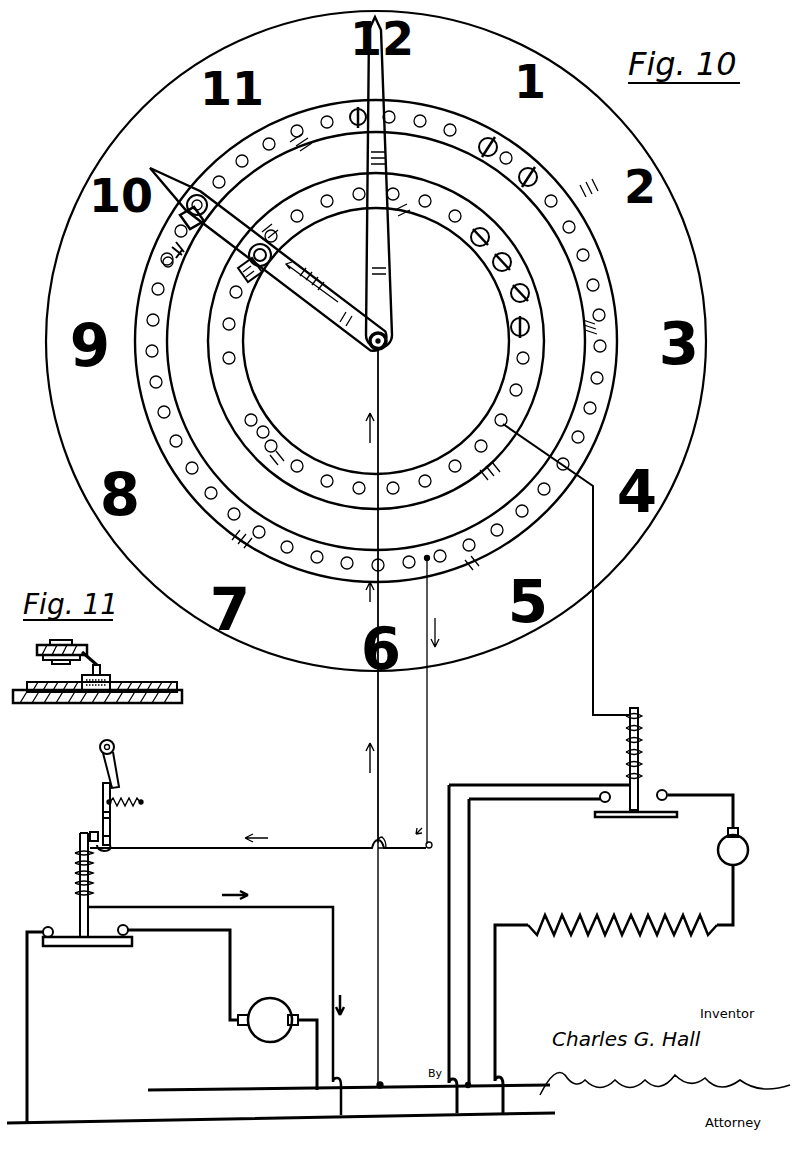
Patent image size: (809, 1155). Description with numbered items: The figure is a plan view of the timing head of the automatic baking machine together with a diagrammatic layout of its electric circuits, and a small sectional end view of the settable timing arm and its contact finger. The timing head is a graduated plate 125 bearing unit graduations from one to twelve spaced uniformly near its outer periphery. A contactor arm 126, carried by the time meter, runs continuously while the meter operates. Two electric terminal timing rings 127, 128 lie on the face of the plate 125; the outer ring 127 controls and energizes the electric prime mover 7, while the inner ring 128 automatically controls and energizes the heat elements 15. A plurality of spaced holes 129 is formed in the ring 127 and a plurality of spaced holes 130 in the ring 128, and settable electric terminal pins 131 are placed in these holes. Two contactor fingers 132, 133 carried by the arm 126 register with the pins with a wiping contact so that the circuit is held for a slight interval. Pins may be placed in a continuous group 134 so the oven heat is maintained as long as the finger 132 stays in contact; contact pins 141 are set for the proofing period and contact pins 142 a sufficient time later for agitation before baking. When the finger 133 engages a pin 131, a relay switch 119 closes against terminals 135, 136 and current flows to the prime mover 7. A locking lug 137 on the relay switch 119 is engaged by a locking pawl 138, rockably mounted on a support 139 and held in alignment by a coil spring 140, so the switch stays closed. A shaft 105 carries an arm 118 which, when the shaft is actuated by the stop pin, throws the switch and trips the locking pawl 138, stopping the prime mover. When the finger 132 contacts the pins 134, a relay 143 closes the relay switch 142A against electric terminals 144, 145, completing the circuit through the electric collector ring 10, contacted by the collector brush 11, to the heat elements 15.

In FIG. 10, the graduated plate 125 is at (613, 123).
In FIG. 11, the graduated plate 125 is at (176, 700).
In FIG. 10, the contactor arm 126 is at (320, 308).
In FIG. 11, the contactor arm 126 is at (80, 650).
In FIG. 10, the electric terminal timing ring 127 is at (165, 430).
In FIG. 11, the electric terminal timing ring 127 is at (160, 686).
In FIG. 10, the electric terminal timing ring 128 is at (278, 432).
In FIG. 10, the spaced holes 129 is at (232, 518).
In FIG. 10, the spaced holes 130 is at (268, 428).
In FIG. 10, the settable electric terminal pin 131 is at (530, 294).
In FIG. 11, the settable electric terminal pin 131 is at (110, 680).
In FIG. 10, the contactor finger 132 is at (246, 280).
In FIG. 10, the contactor finger 133 is at (175, 224).
In FIG. 11, the contactor finger 133 is at (100, 668).
In FIG. 10, the group of pins 134 is at (510, 263).
In FIG. 10, the contact pins 141 is at (350, 113).
In FIG. 10, the contact pins 142 is at (533, 170).
In FIG. 10, the relay 143 is at (638, 710).
In FIG. 10, the relay switch 142A is at (642, 818).
In FIG. 10, the electric terminal 144 is at (600, 804).
In FIG. 10, the electric terminal 145 is at (667, 789).
In FIG. 10, the electric collector ring 10 is at (721, 860).
In FIG. 10, the collector brush 11 is at (740, 832).
In FIG. 10, the heat elements 15 is at (614, 932).
In FIG. 10, the electric prime mover 7 is at (268, 1012).
In FIG. 10, the shaft 105 is at (114, 745).
In FIG. 10, the arm 118 is at (116, 764).
In FIG. 10, the relay switch 119 is at (80, 843).
In FIG. 10, the terminal 135 is at (50, 926).
In FIG. 10, the terminal 136 is at (130, 928).
In FIG. 10, the locking lug 137 is at (92, 836).
In FIG. 10, the locking pawl 138 is at (110, 840).
In FIG. 10, the support 139 is at (110, 818).
In FIG. 10, the coil spring 140 is at (140, 796).